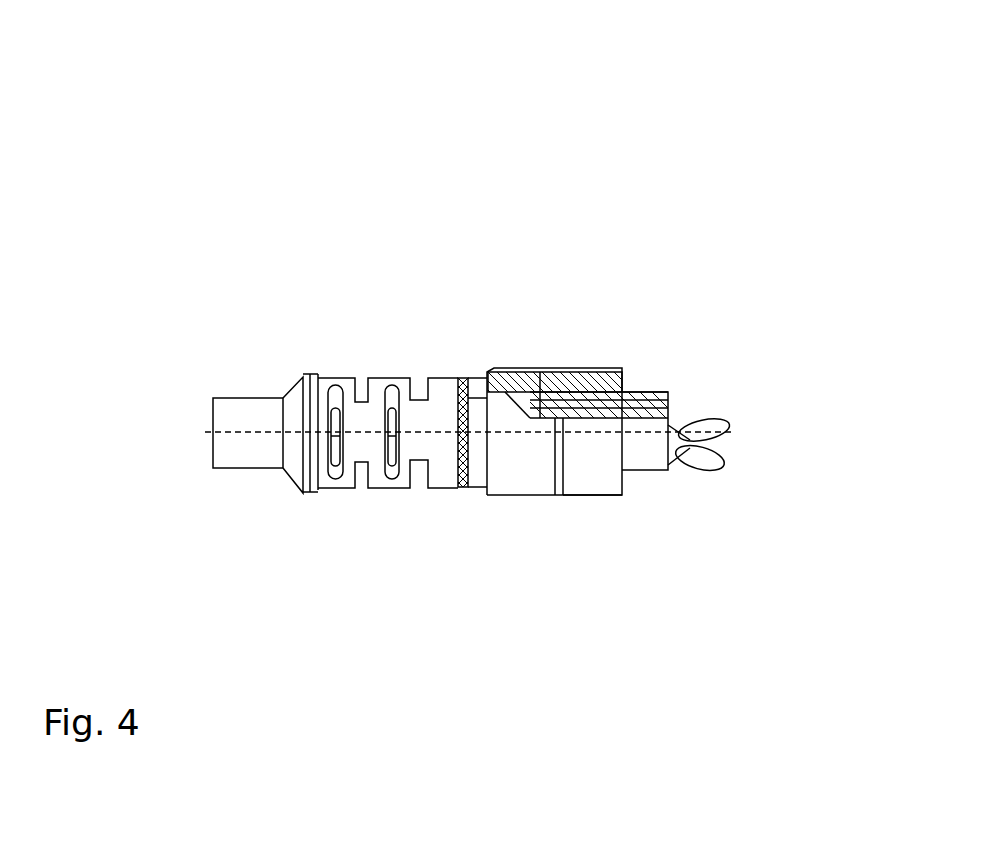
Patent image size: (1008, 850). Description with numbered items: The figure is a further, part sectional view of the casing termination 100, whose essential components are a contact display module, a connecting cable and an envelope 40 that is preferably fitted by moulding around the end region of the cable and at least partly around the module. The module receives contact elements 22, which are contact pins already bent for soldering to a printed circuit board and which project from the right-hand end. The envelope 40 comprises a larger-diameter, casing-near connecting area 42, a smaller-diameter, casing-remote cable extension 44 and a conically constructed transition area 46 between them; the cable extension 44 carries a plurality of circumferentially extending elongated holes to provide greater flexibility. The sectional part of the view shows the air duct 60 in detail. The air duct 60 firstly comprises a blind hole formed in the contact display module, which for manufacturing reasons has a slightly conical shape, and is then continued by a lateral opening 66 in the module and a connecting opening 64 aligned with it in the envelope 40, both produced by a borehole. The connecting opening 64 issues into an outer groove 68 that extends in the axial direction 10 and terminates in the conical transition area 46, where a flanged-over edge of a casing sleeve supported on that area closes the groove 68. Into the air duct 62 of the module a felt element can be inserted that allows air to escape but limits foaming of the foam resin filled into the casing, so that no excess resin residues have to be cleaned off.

The casing termination 100 is at (684, 226).
The axial direction 10 is at (215, 432).
The cable extension 44 is at (322, 484).
The transition area 46 is at (483, 484).
The connecting area 42 is at (523, 484).
The envelope 40 is at (596, 484).
The outer groove 68 is at (513, 376).
The connecting opening 64 is at (541, 387).
The lateral opening 66 is at (545, 405).
The air duct 62 is at (643, 390).
The air duct 60 is at (662, 403).
The contact elements 22 is at (700, 457).